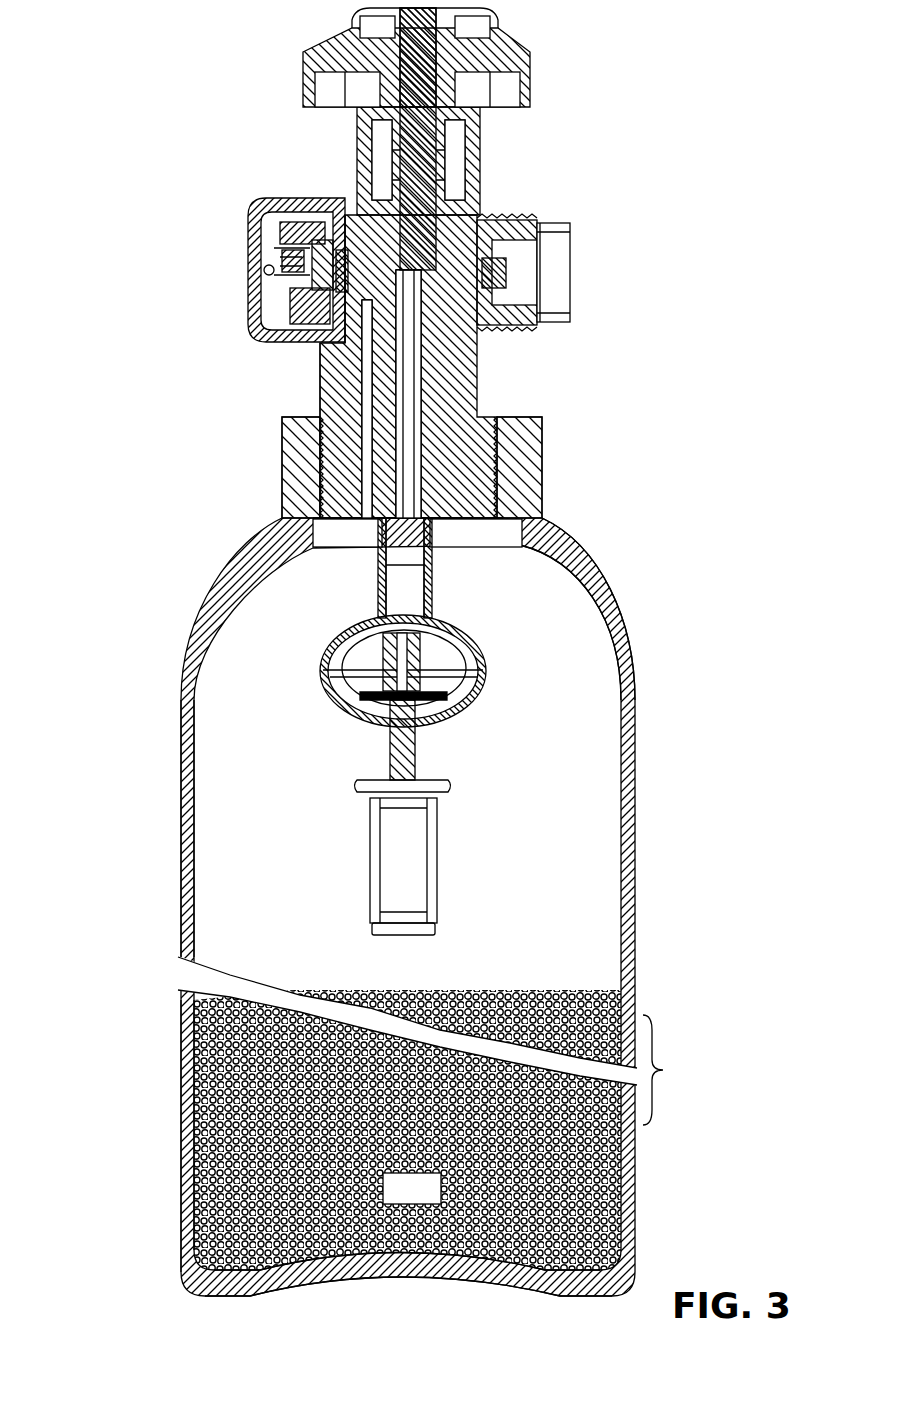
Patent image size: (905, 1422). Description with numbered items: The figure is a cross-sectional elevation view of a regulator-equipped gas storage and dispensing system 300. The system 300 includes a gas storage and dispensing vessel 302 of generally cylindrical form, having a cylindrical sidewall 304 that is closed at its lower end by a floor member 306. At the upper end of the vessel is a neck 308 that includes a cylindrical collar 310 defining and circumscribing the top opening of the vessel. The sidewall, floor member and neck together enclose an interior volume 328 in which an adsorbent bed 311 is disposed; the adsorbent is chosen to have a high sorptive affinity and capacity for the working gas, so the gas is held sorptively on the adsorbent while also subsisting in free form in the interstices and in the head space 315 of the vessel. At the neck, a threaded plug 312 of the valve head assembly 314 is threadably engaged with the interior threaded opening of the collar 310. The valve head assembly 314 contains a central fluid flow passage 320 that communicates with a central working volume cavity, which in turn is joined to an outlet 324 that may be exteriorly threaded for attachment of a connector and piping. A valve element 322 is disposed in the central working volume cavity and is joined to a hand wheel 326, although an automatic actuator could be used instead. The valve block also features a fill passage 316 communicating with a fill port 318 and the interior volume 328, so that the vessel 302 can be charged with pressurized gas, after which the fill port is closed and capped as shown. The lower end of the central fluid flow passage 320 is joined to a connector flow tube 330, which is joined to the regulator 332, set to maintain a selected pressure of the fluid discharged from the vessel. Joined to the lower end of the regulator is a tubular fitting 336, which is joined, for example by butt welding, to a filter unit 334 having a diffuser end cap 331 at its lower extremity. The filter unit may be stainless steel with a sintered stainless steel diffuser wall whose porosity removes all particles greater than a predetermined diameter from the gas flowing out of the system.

The gas storage and dispensing system 300 is at (200, 512).
The gas storage and dispensing vessel 302 is at (632, 802).
The cylindrical sidewall 304 is at (186, 770).
The floor member 306 is at (315, 1276).
The neck 308 is at (572, 568).
The cylindrical collar 310 is at (525, 482).
The adsorbent bed 311 is at (240, 1188).
The threaded plug 312 is at (450, 393).
The valve head assembly 314 is at (340, 358).
The head space 315 is at (242, 862).
The fill passage 316 is at (363, 380).
The fill port 318 is at (254, 232).
The central fluid flow passage 320 is at (412, 362).
The valve element 322 is at (497, 230).
The outlet 324 is at (553, 262).
The hand wheel 326 is at (520, 73).
The interior volume 328 is at (407, 1130).
The connector flow tube 330 is at (380, 578).
The diffuser end cap 331 is at (412, 936).
The regulator 332 is at (470, 702).
The filter unit 334 is at (425, 860).
The tubular fitting 336 is at (420, 766).